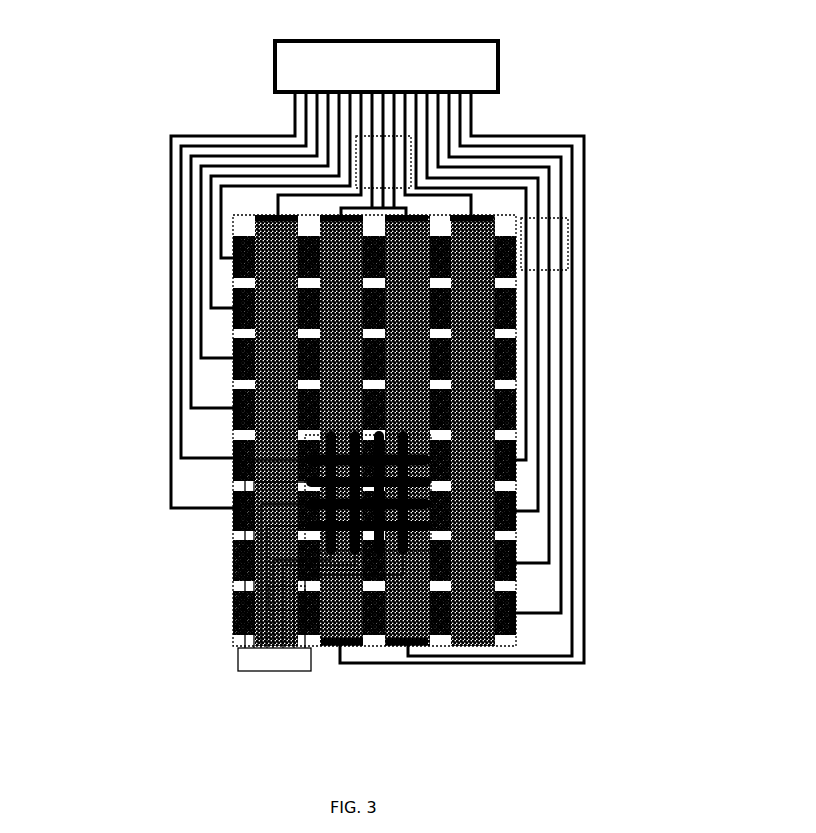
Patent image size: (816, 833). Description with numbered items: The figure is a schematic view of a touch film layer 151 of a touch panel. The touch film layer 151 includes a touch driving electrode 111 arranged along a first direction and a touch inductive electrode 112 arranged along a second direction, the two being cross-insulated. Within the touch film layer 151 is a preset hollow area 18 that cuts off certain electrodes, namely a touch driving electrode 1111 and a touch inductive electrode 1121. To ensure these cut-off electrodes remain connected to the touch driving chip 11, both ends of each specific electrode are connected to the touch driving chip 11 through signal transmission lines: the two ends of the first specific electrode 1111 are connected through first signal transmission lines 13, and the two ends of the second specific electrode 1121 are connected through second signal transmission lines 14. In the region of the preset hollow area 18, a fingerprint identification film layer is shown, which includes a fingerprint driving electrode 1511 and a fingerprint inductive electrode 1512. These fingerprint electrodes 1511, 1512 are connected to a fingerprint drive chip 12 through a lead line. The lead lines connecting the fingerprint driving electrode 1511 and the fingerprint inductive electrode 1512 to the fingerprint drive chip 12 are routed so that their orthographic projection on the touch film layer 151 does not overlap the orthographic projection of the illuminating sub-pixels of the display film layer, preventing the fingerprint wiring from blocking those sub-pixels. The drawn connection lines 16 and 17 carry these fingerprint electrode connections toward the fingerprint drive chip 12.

The touch driving chip 11 is at (275, 57).
The fingerprint drive chip 12 is at (232, 650).
The first signal transmission lines 13 is at (395, 150).
The second signal transmission lines 14 is at (557, 230).
The touch driving electrode 111 is at (260, 227).
The touch inductive electrode 112 is at (228, 242).
The touch inductive electrode 1121 is at (222, 453).
The touch driving electrode 1111 is at (403, 640).
The touch film layer 151 is at (508, 207).
The fingerprint driving electrode 1511 is at (425, 447).
The fingerprint inductive electrode 1512 is at (425, 403).
The first connection line 16 is at (243, 545).
The second connection line 17 is at (262, 590).
The preset hollow area 18 is at (408, 473).